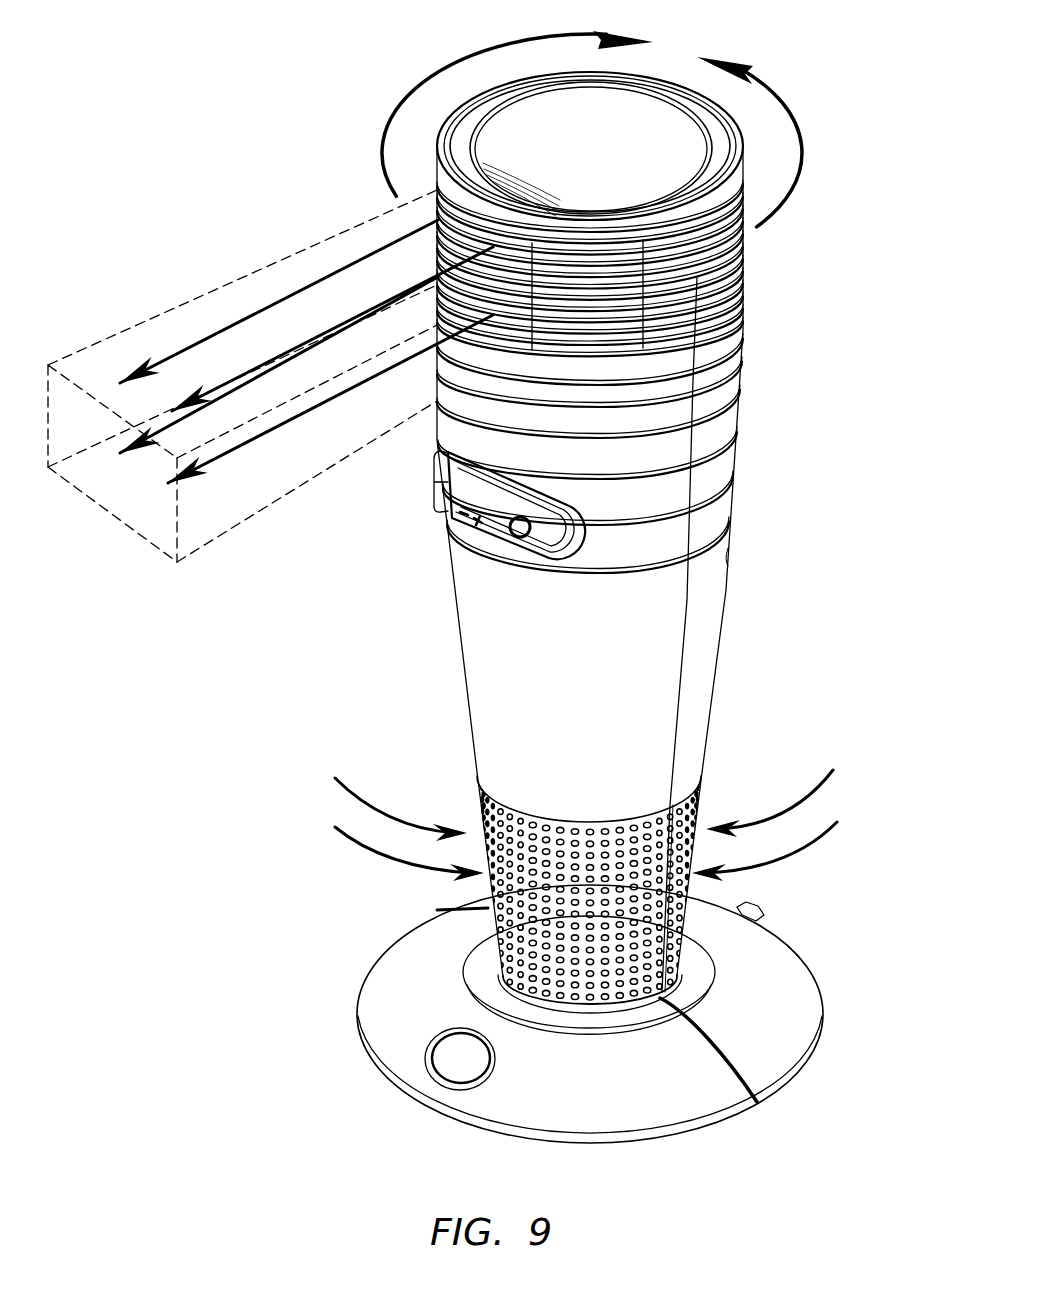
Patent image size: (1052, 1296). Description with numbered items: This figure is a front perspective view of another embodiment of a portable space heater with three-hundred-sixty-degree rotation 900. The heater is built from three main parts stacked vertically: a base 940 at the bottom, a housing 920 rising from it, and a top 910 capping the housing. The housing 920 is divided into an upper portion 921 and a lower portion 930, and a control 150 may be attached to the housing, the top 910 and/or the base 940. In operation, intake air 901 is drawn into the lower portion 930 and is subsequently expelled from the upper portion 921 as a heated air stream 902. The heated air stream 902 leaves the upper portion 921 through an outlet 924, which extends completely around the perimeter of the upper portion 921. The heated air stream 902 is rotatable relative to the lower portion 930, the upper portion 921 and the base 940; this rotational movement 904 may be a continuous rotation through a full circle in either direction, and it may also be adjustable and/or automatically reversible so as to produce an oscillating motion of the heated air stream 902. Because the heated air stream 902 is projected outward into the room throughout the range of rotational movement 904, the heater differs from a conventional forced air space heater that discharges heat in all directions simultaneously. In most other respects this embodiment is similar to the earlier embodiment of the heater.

The portable space heater with 360° rotation 900 is at (236, 52).
The top 910 is at (575, 133).
The rotational movement 904 is at (786, 104).
The heated air stream 902 is at (270, 262).
The outlet 924 is at (716, 270).
The upper portion 921 is at (740, 278).
The housing 920 is at (678, 449).
The lower portion 930 is at (718, 621).
The control 150 is at (478, 500).
The intake air 901 is at (397, 818).
The base 940 is at (410, 963).